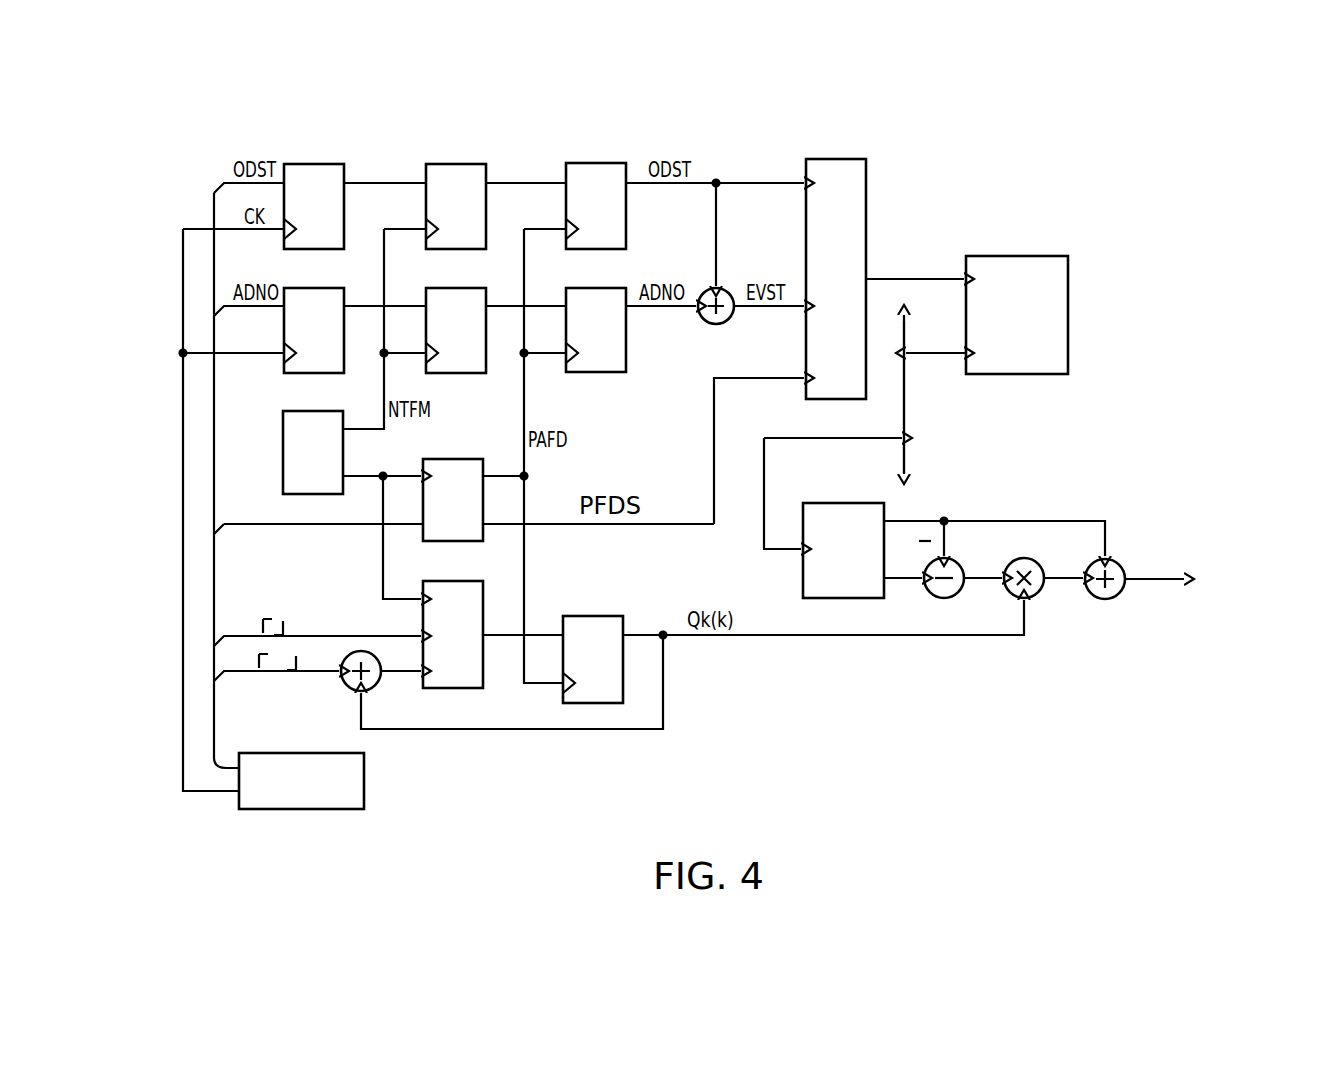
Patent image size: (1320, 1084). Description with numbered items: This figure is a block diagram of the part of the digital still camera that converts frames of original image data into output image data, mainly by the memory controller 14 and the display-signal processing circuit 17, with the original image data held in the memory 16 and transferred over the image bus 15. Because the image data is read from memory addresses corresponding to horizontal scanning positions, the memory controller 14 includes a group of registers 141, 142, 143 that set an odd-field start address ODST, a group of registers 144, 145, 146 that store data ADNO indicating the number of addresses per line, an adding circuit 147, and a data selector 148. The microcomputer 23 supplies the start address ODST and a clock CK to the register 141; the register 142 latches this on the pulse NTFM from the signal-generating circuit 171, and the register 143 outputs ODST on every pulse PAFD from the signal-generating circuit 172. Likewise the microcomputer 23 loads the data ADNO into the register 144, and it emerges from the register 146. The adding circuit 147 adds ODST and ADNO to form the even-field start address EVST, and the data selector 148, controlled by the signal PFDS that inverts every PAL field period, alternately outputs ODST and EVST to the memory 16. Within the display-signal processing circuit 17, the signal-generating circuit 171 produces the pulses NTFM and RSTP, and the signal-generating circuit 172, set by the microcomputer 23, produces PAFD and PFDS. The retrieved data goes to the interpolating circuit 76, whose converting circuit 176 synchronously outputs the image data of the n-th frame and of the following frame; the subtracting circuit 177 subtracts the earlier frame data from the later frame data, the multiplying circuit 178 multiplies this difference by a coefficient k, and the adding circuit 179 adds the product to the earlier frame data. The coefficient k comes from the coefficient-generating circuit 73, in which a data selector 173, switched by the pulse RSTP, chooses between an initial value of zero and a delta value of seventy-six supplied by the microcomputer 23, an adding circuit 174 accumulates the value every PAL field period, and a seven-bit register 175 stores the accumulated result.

The memory controller 14 is at (467, 139).
The register 141 is at (305, 248).
The register 142 is at (447, 248).
The register 143 is at (587, 248).
The register 144 is at (305, 372).
The register 145 is at (447, 372).
The register 146 is at (587, 371).
The adding circuit 147 is at (718, 323).
The data selector 148 is at (865, 210).
The memory 16 is at (985, 255).
The image bus 15 is at (903, 400).
The display-signal processing circuit 17 is at (624, 471).
The signal-generating circuit 171 is at (282, 455).
The signal-generating circuit 172 is at (440, 540).
The data selector 173 is at (440, 687).
The adding circuit 174 is at (345, 685).
The coefficient-generating circuit 73 is at (564, 589).
The 7-bit register 175 is at (580, 615).
The microcomputer 23 is at (363, 787).
The interpolating circuit 76 is at (1004, 496).
The converting circuit 176 is at (822, 502).
The subtracting circuit 177 is at (950, 597).
The multiplying circuit 178 is at (1030, 556).
The adding circuit 179 is at (1110, 598).